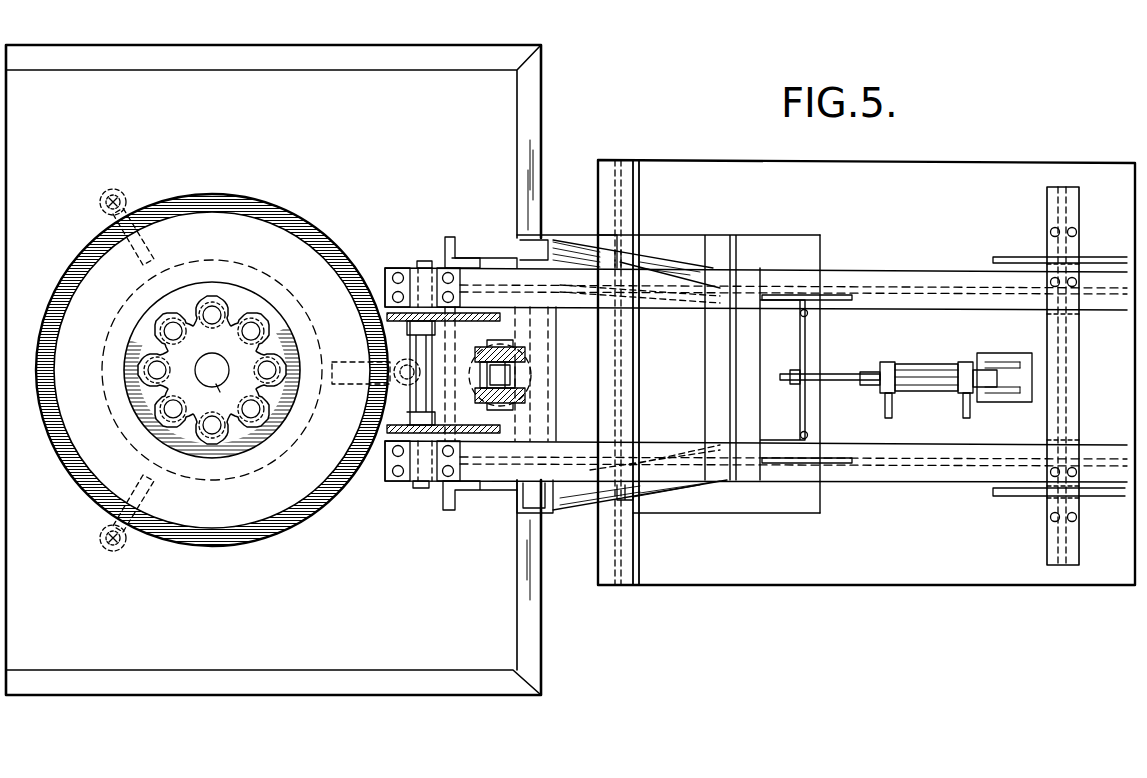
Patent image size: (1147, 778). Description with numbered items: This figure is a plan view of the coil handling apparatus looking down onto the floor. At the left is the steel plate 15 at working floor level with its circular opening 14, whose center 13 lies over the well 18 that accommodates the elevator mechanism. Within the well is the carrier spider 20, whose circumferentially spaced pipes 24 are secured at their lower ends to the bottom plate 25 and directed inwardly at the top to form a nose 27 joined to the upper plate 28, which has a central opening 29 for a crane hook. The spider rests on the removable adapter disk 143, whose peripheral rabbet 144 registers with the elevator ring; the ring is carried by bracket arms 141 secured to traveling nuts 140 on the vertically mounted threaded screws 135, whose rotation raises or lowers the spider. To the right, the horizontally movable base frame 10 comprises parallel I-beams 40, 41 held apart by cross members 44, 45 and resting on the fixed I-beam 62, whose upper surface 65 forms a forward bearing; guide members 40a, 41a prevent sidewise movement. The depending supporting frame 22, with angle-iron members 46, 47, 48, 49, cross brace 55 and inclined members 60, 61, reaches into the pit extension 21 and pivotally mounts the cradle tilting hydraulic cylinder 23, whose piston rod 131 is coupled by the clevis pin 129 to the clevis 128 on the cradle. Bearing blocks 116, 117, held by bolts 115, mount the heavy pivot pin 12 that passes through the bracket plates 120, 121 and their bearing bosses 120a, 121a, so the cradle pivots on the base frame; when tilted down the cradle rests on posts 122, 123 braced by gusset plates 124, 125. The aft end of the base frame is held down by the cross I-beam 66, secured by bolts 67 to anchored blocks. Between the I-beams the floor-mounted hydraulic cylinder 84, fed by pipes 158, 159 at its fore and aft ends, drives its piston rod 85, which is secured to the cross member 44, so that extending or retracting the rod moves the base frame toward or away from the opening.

The base frame 10 is at (955, 263).
The pivot pin 12 is at (426, 260).
The center of opening 13 is at (210, 366).
The opening 14 is at (312, 232).
The steel plate 15 is at (250, 142).
The well 18 is at (322, 497).
The carrier spider 20 is at (140, 319).
The pit extension 21 is at (740, 514).
The depending supporting frame 22 is at (464, 251).
The cradle tilting hydraulic cylinder 23 is at (532, 367).
The pipes 24 is at (258, 312).
The bottom plate 25 is at (137, 413).
The nose 27 is at (140, 370).
The upper plate 28 is at (162, 350).
The central opening 29 is at (220, 392).
The I-beam 40 is at (910, 474).
The guide member 40a is at (624, 496).
The I-beam 41 is at (906, 272).
The guide member 41a is at (628, 262).
The cross member 44 is at (790, 336).
The cross member 45 is at (704, 418).
The angle-iron member 46 is at (450, 510).
The angle-iron member 47 is at (545, 512).
The angle-iron member 48 is at (455, 240).
The angle-iron member 49 is at (555, 240).
The cross brace 55 is at (530, 375).
The inclined member 60 is at (655, 495).
The inclined member 61 is at (655, 258).
The fixed I-beam 62 is at (648, 363).
The upper surface 65 is at (641, 386).
The cross I-beam 66 is at (1080, 372).
The bolts 67 is at (1050, 232).
The hydraulic cylinder 84 is at (922, 368).
The piston rod 85 is at (838, 373).
The bolts 115 is at (397, 272).
The bearing block 116 is at (418, 490).
The bearing block 117 is at (415, 268).
The bracket plate 120 is at (387, 429).
The bearing boss 120a is at (440, 430).
The bracket plate 121 is at (387, 317).
The bearing boss 121a is at (440, 318).
The post 122 is at (808, 436).
The post 123 is at (810, 312).
The gusset plate 124 is at (785, 464).
The gusset plate 125 is at (785, 294).
The clevis 128 is at (525, 352).
The clevis pin 129 is at (525, 400).
The piston rod 131 is at (515, 380).
The threaded screws 135 is at (100, 201).
The traveling nut 140 is at (120, 195).
The bracket arm 141 is at (140, 225).
The adapter disk 143 is at (253, 517).
The rabbet 144 is at (292, 440).
The pipe 158 is at (884, 406).
The pipe 159 is at (962, 406).